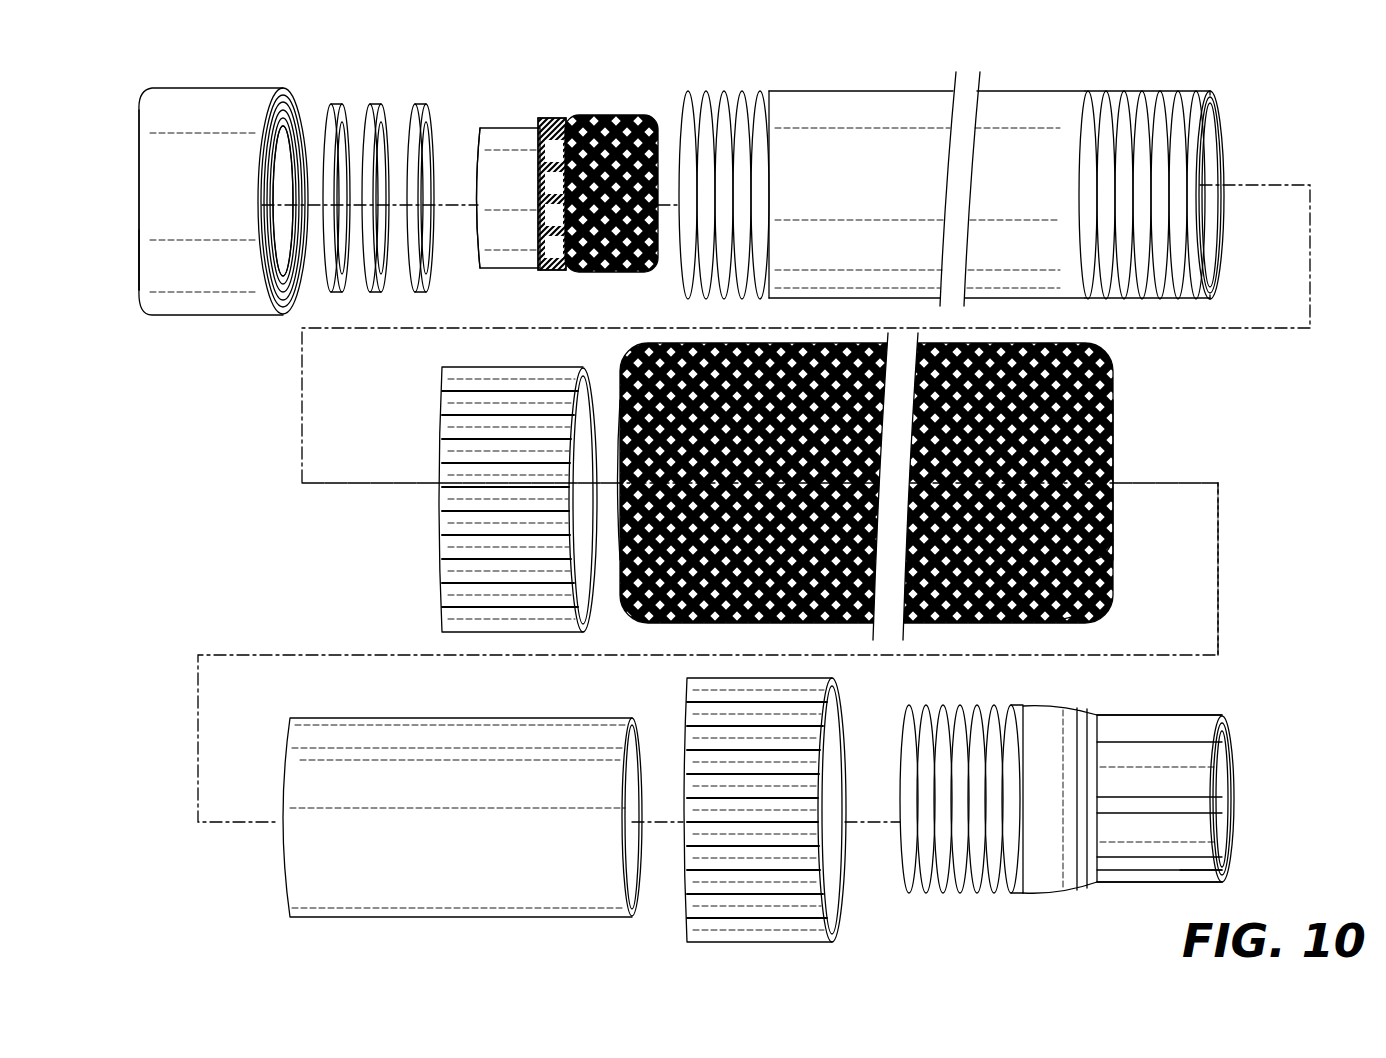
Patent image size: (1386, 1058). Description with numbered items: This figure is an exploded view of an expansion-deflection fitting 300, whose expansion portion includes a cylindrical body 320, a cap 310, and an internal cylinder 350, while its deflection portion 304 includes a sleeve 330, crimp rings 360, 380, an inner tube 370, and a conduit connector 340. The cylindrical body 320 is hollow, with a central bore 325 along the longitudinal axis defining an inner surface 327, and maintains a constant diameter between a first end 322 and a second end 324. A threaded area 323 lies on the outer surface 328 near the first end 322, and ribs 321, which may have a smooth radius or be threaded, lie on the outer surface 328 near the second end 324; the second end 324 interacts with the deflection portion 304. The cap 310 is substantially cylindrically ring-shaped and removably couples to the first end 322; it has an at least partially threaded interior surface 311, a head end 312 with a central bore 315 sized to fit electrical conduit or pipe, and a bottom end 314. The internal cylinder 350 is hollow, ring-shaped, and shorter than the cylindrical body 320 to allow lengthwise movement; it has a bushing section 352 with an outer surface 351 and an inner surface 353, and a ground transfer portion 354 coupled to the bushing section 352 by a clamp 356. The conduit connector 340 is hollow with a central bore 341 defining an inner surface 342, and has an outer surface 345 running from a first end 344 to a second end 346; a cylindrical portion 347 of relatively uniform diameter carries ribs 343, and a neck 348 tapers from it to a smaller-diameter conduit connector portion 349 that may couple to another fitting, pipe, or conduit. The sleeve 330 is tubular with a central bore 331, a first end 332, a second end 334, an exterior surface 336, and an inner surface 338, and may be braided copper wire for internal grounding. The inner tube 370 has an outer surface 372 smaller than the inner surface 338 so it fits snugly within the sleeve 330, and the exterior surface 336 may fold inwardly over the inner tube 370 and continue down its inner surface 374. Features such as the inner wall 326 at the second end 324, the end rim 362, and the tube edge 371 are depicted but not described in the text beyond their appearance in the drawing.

The expansion-deflection fitting 300 is at (262, 566).
The deflection portion 304 is at (1265, 655).
The cap 310 is at (215, 105).
The interior surface 311 is at (285, 115).
The head end 312 is at (142, 245).
The bottom end 314 is at (278, 275).
The central bore 315 is at (130, 155).
The cylindrical body 320 is at (965, 186).
The ribs 321 is at (1158, 278).
The first end 322 is at (680, 150).
The threaded area 323 is at (720, 95).
The second end 324 is at (1213, 152).
The central bore 325 is at (1210, 202).
The inner wall 326 is at (1222, 242).
The inner surface 327 is at (1222, 270).
The outer surface 328 is at (1052, 91).
The sleeve 330 is at (902, 492).
The central bore 331 is at (1130, 510).
The first end 332 is at (636, 420).
The second end 334 is at (1115, 555).
The exterior surface 336 is at (1065, 615).
The inner surface 338 is at (422, 108).
The conduit connector 340 is at (377, 108).
The central bore 341 is at (1233, 820).
The inner surface 342 is at (338, 108).
The ribs 343 is at (930, 882).
The first end 344 is at (1073, 808).
The outer surface 345 is at (1125, 722).
The second end 346 is at (1232, 800).
The cylindrical portion 347 is at (1001, 882).
The neck 348 is at (1087, 725).
The conduit connector portion 349 is at (1176, 870).
The internal cylinder 350 is at (546, 165).
The outer surface 351 is at (497, 165).
The bushing section 352 is at (522, 128).
The inner surface 353 is at (472, 178).
The ground transfer portion 354 is at (620, 135).
The clamp 356 is at (560, 145).
The crimp ring 360 is at (470, 585).
The body assembly 362 is at (1195, 70).
The inner tube 370 is at (484, 814).
The tube end rim 371 is at (643, 870).
The outer surface 372 is at (490, 750).
The inner surface 374 is at (640, 780).
The crimp ring 380 is at (820, 935).